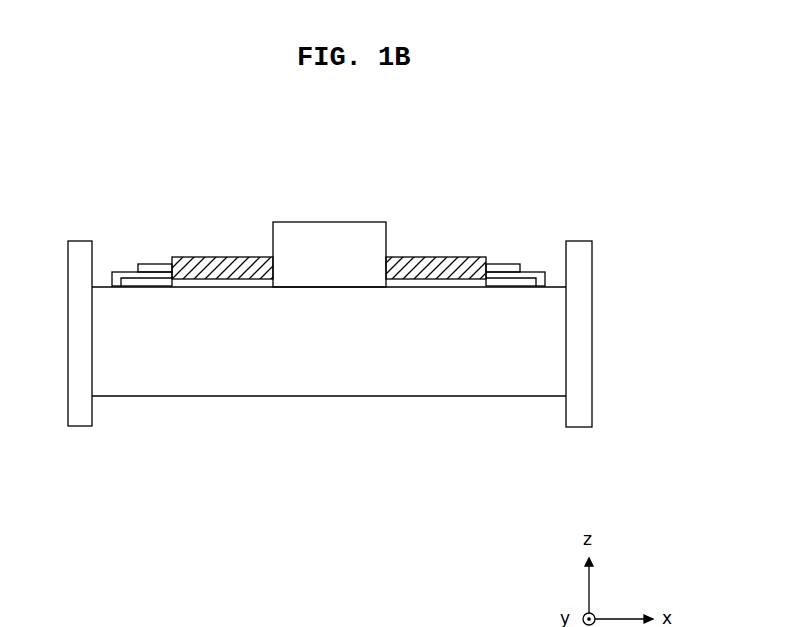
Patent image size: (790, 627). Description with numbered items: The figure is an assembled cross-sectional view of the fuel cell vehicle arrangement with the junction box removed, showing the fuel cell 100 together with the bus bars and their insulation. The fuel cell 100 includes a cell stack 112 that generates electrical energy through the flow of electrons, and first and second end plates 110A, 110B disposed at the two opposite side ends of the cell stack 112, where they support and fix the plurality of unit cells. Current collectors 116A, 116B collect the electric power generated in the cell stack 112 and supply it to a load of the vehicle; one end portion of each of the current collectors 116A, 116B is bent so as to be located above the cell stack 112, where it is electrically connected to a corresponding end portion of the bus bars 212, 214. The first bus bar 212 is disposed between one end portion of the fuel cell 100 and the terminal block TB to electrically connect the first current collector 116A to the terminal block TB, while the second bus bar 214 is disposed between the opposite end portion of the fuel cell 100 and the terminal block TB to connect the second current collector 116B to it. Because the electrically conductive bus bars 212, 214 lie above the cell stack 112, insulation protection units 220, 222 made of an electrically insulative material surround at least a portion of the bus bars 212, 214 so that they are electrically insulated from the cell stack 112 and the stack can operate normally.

The fuel cell 100 is at (415, 487).
The first end plate 110A is at (80, 418).
The second end plate 110B is at (578, 420).
The cell stack 112 is at (335, 378).
The first current collector 116A is at (121, 272).
The second current collector 116B is at (537, 272).
The first bus bar 212 is at (154, 264).
The second bus bar 214 is at (504, 264).
The insulation protection unit 220 is at (207, 257).
The insulation protection unit 222 is at (451, 257).
The terminal block TB is at (330, 243).